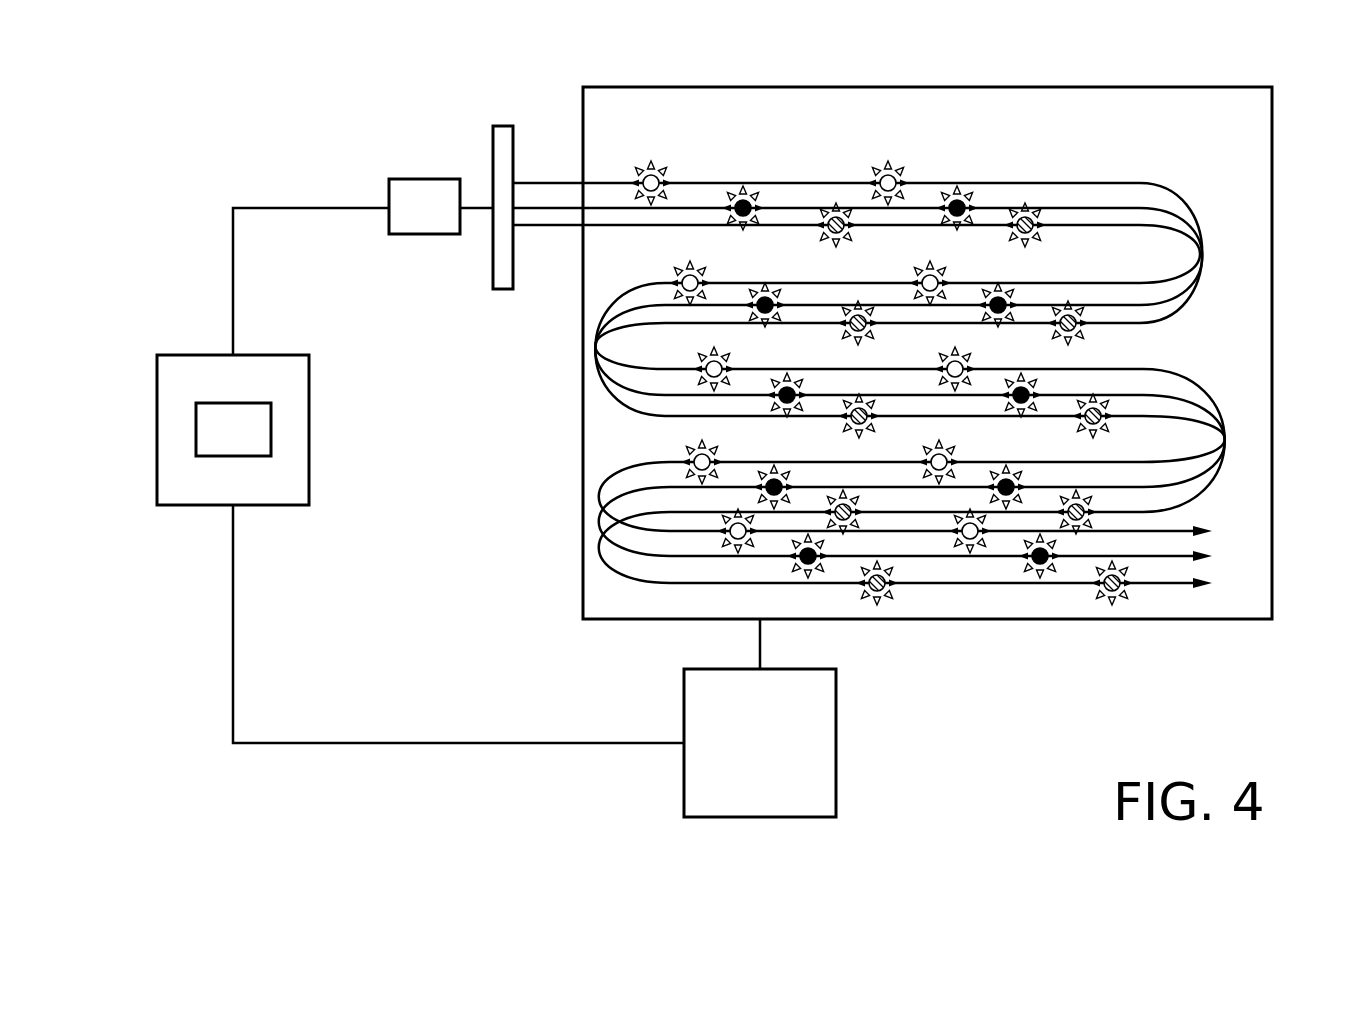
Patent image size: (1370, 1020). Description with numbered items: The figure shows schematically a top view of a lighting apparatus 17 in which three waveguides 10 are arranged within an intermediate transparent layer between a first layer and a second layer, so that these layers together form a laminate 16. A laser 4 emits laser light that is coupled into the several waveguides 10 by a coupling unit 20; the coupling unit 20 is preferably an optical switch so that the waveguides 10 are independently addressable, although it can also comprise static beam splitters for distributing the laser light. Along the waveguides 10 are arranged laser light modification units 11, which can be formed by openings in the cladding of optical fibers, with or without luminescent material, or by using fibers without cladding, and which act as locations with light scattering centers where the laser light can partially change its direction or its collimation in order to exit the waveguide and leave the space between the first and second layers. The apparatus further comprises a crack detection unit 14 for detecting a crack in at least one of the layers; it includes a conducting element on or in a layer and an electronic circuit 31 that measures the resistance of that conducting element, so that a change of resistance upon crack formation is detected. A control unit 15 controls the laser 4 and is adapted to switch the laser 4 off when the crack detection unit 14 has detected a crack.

The laser 4 is at (416, 221).
The waveguides 10 is at (553, 183).
The laser light modification units 11 is at (882, 175).
The crack detection unit 14 is at (290, 355).
The control unit 15 is at (746, 759).
The laminate 16 is at (1160, 86).
The lighting apparatus 17 is at (969, 360).
The coupling unit 20 is at (502, 126).
The electronic circuit 31 is at (219, 444).